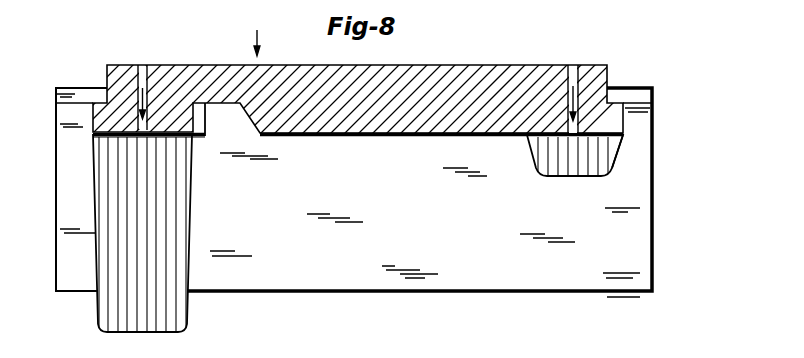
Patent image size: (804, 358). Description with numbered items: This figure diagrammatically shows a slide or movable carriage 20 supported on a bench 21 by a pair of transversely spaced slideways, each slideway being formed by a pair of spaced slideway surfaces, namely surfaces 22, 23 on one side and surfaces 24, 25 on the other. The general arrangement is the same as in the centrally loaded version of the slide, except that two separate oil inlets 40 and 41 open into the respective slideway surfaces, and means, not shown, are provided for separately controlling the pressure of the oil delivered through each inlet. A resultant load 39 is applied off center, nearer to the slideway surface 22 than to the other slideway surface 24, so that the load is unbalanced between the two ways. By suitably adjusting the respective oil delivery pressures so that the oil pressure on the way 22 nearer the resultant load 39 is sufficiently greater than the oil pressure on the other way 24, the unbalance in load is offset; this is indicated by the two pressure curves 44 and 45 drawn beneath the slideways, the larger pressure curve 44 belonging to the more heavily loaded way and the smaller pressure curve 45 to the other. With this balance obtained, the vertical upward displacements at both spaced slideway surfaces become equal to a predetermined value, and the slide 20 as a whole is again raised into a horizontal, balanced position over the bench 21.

The slide 20 is at (204, 72).
The bench 21 is at (354, 192).
The slideway surface 22 is at (115, 137).
The slideway surface 23 is at (106, 137).
The slideway surface 24 is at (546, 133).
The slideway surface 25 is at (596, 136).
The resultant load 39 is at (259, 43).
The oil inlet 40 is at (143, 66).
The oil inlet 41 is at (575, 69).
The pressure curve 44 is at (189, 199).
The pressure curve 45 is at (575, 168).